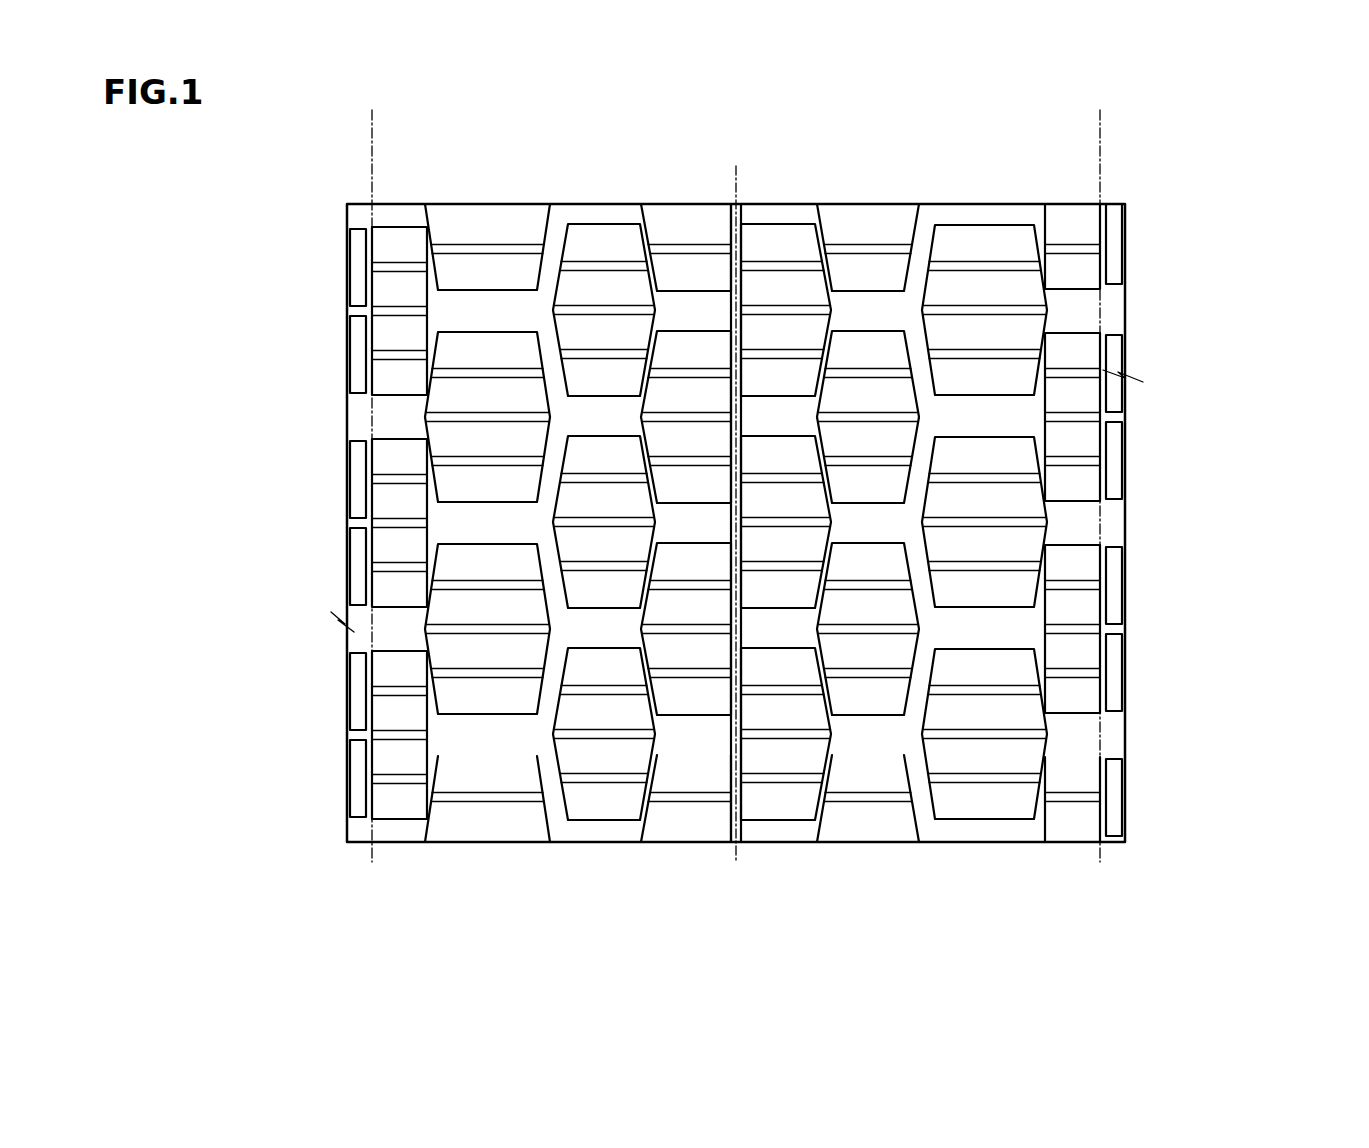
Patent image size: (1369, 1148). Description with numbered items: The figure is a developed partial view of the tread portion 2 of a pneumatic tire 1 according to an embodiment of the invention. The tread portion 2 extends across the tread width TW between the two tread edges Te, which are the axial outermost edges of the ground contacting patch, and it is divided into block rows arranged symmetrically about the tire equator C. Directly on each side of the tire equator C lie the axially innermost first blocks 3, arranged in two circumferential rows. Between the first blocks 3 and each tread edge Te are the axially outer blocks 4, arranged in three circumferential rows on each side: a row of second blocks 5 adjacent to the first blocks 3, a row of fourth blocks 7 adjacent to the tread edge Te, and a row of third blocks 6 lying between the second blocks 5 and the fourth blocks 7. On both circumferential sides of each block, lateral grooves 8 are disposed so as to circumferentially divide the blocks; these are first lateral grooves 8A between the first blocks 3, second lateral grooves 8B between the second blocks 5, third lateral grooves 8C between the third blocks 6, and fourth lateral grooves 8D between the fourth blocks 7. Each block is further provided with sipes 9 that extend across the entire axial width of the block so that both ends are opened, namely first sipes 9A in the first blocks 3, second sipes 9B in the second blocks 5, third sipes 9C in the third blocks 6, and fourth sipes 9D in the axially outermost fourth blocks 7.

The pneumatic tire 1 is at (797, 479).
The tread portion 2 is at (737, 523).
The axially innermost first blocks 3 is at (707, 336).
The axially outer blocks 4 is at (736, 528).
The second blocks 5 is at (736, 527).
The third blocks 6 is at (481, 340).
The fourth blocks 7 is at (411, 275).
The lateral grooves 8 is at (736, 526).
The first lateral grooves 8A is at (776, 406).
The second lateral grooves 8B is at (869, 298).
The third lateral grooves 8C is at (979, 406).
The fourth lateral grooves 8D is at (793, 177).
The sipes 9 is at (734, 523).
The first sipes 9A is at (687, 466).
The second sipes 9B is at (597, 522).
The third sipes 9C is at (480, 628).
The fourth sipes 9D is at (225, 340).
The tread width TW is at (372, 121).
The tire equator C is at (737, 500).
The tread edges Te is at (352, 823).